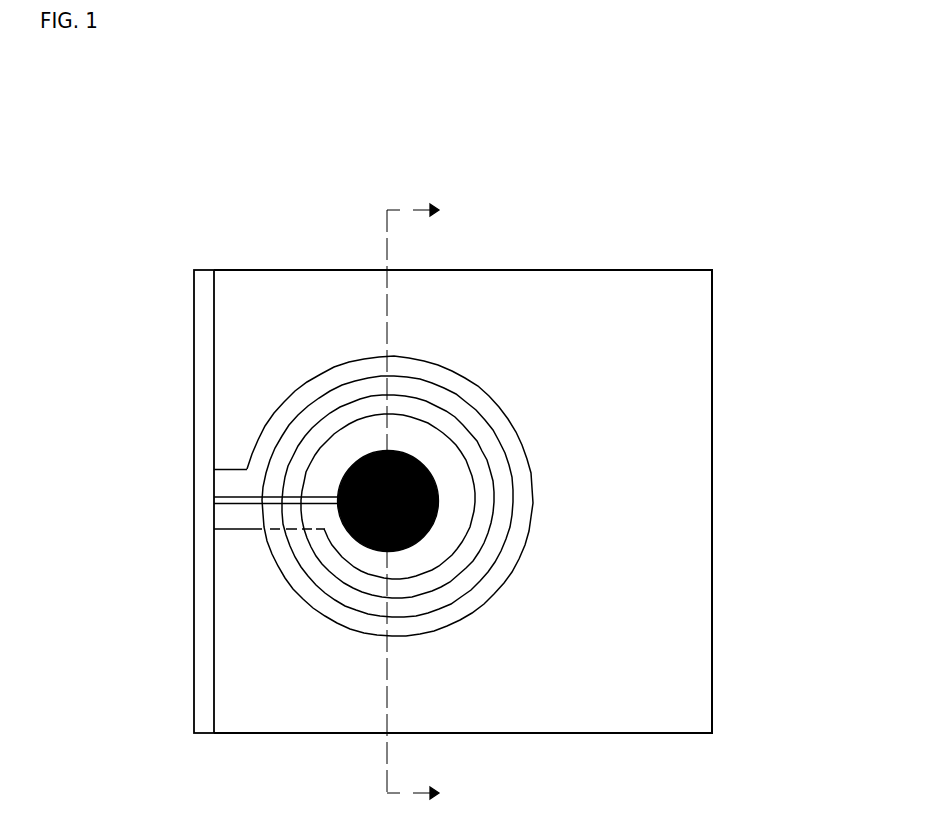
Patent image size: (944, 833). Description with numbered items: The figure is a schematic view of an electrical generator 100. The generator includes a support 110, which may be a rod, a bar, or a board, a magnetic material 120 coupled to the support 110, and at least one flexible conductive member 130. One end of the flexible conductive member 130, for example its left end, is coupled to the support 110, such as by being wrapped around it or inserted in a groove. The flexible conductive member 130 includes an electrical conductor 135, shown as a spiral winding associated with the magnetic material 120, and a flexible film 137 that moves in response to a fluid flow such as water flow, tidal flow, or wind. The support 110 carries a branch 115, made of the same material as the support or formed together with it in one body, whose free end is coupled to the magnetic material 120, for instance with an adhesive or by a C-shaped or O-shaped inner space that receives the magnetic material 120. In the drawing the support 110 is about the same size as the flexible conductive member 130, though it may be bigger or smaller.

The electrical generator 100 is at (194, 78).
The support 110 is at (194, 327).
The branch 115 is at (240, 500).
The magnetic material 120 is at (417, 457).
The flexible conductive member 130 is at (287, 270).
The electrical conductor 135 is at (517, 438).
The flexible film 137 is at (682, 420).